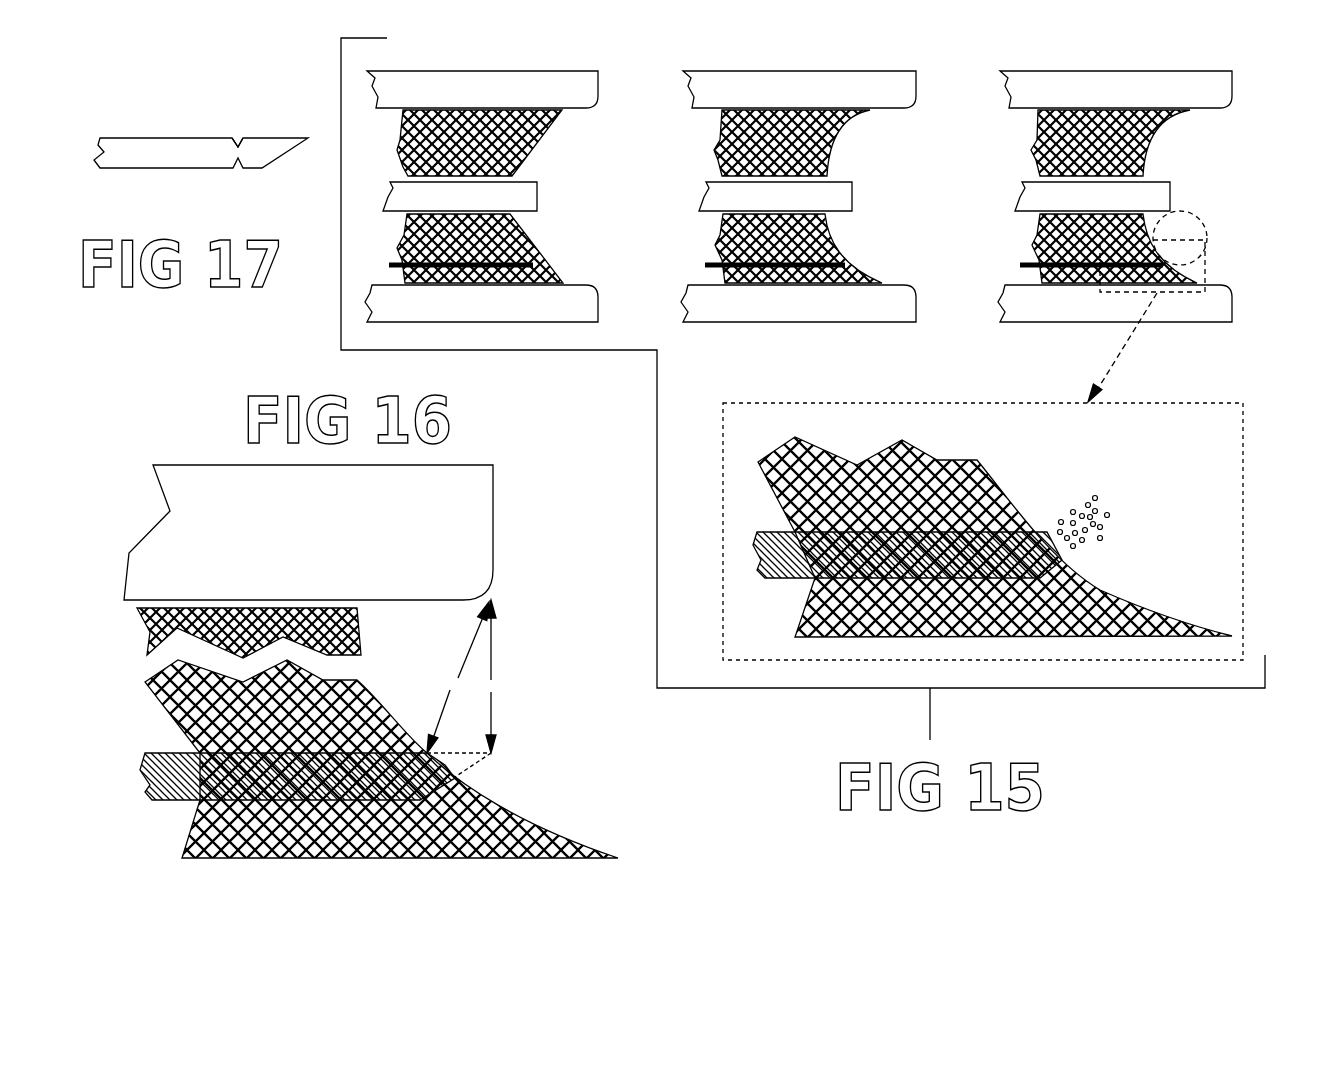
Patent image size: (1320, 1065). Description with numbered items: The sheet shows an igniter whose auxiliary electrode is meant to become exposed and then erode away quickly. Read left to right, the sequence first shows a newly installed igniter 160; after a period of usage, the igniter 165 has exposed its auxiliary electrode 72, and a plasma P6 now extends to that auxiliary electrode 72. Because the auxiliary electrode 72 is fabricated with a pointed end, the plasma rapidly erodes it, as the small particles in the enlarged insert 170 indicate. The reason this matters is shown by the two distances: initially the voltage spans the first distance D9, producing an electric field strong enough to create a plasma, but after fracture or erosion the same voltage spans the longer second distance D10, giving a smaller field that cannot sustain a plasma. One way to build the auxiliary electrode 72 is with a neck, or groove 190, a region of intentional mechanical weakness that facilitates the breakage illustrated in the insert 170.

In FIG. 15, the newly installed igniter 160 is at (508, 40).
In FIG. 15, the igniter after usage 165 is at (834, 49).
In FIG. 15, the auxiliary electrode 72 is at (867, 244).
In FIG. 17, the auxiliary electrode 72 is at (176, 168).
In FIG. 15, the plasma P6 is at (1174, 248).
In FIG. 15, the insert 170 is at (1155, 403).
In FIG. 16, the first distance D9 is at (499, 688).
In FIG. 16, the second distance D10 is at (434, 677).
In FIG. 17, the neck or groove 190 is at (245, 115).